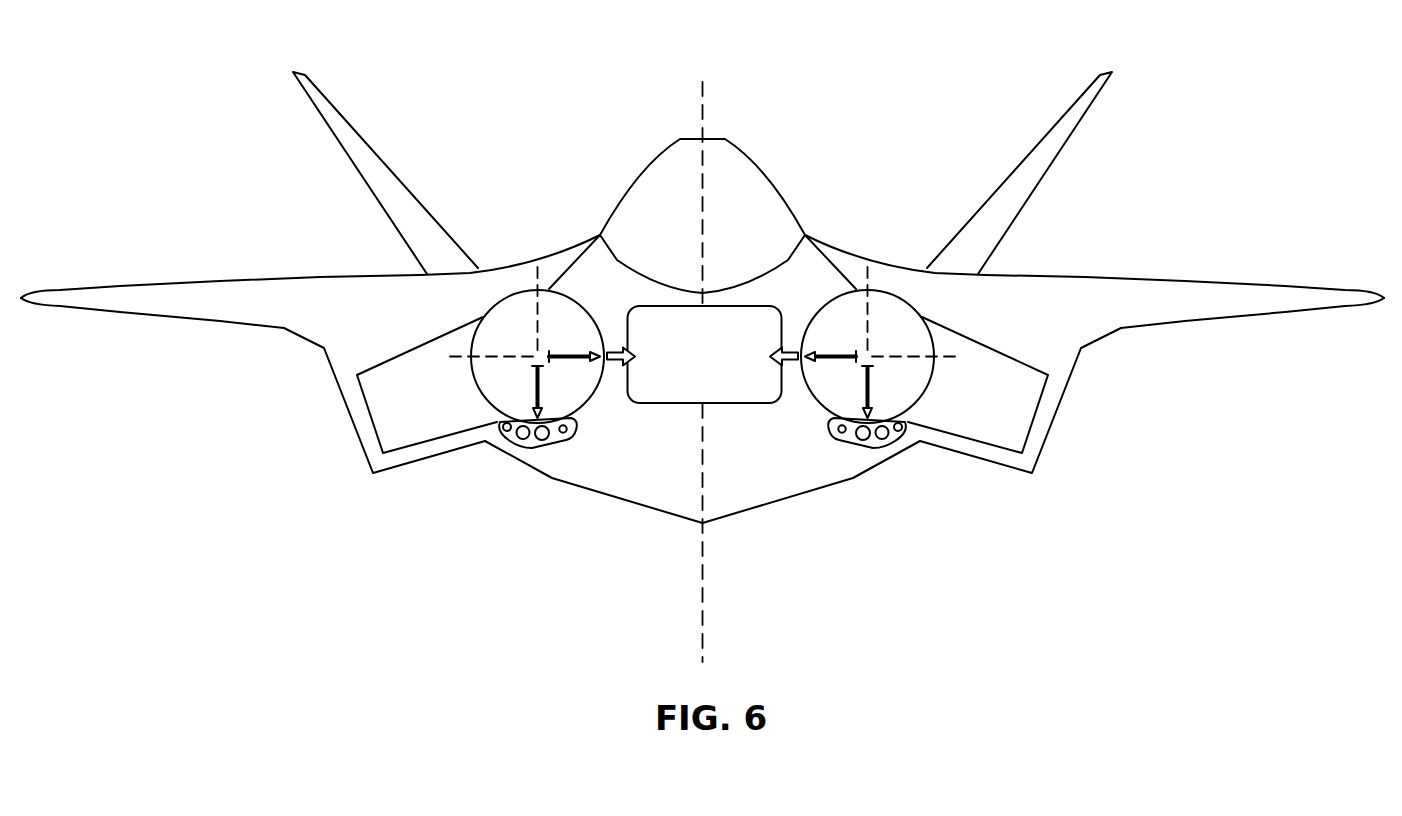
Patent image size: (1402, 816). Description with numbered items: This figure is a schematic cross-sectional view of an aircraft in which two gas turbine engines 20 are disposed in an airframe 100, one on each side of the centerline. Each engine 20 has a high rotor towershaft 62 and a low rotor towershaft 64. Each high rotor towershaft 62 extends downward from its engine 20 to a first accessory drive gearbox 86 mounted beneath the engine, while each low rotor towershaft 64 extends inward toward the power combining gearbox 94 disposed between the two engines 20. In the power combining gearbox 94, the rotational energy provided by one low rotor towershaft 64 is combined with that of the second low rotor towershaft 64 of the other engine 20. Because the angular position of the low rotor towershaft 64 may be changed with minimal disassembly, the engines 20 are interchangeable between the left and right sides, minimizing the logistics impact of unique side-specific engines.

The airframe 100 is at (743, 188).
The gas turbine engine 20 is at (518, 306).
The low rotor towershaft 64 is at (572, 350).
The high rotor towershaft 62 is at (533, 387).
The power combining gearbox 94 is at (667, 407).
The first accessory drive gearbox 86 is at (525, 441).